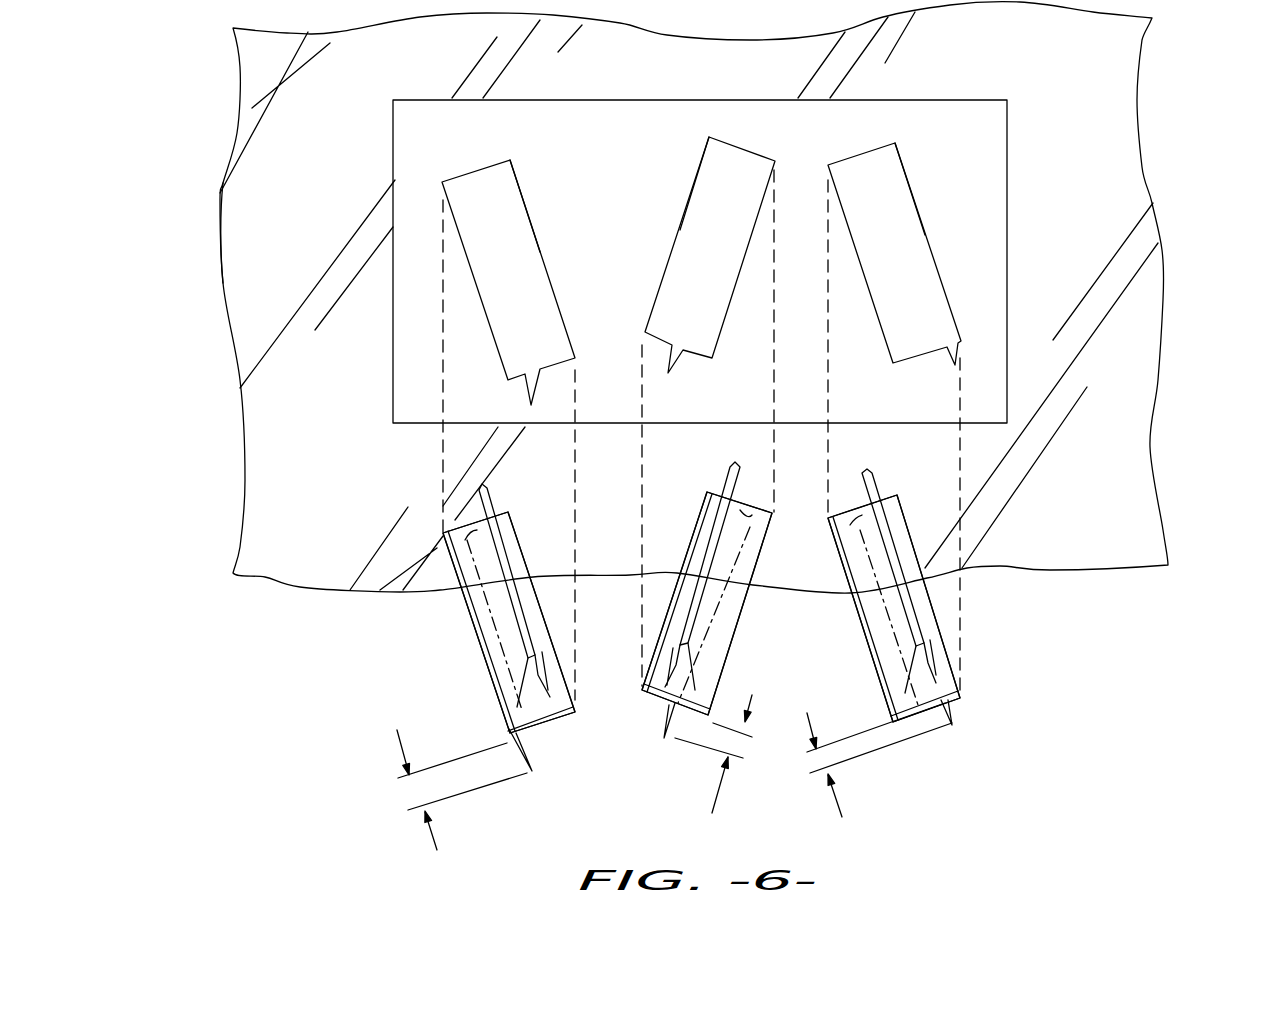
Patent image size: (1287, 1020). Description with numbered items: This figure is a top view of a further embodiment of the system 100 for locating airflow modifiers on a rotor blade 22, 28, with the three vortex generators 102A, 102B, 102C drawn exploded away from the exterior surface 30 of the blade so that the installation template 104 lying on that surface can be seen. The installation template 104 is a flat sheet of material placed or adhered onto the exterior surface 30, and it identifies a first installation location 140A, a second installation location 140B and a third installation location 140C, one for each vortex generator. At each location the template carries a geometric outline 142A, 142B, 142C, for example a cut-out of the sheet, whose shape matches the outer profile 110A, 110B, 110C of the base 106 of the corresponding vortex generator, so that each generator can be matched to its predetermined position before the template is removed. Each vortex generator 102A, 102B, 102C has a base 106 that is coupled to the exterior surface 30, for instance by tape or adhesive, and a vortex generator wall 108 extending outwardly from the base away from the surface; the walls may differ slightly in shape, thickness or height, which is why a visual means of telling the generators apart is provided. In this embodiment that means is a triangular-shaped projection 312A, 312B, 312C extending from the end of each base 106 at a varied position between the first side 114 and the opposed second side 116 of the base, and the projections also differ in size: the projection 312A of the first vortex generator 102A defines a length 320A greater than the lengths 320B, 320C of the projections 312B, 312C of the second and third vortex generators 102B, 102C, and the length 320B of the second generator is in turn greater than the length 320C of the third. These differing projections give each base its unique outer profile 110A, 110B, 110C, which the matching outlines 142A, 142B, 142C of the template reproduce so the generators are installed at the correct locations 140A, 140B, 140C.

The system 100 is at (702, 297).
The rotor blade 22 is at (642, 297).
The substrate 28 is at (262, 268).
The exterior surface 30 is at (245, 197).
The installation template 104 is at (612, 126).
The first installation location 140A is at (517, 421).
The second installation location 140B is at (700, 411).
The third installation location 140C is at (903, 413).
The first geometric outline 142A is at (527, 205).
The second geometric outline 142B is at (680, 213).
The third geometric outline 142C is at (912, 190).
The first vortex generator 102A is at (438, 685).
The second vortex generator 102B is at (638, 688).
The third vortex generator 102C is at (977, 680).
The base 106 is at (514, 527).
The vortex generator wall 108 is at (460, 512).
The outer profile 110A is at (466, 620).
The outer profile 110B is at (754, 600).
The outer profile 110C is at (948, 625).
The first side 114 is at (487, 675).
The second side 116 is at (557, 650).
The triangular-shaped projection 312A is at (532, 760).
The triangular-shaped projection 312B is at (663, 728).
The triangular-shaped projection 312C is at (953, 720).
The length 320A is at (435, 843).
The length 320B is at (715, 798).
The length 320C is at (842, 813).